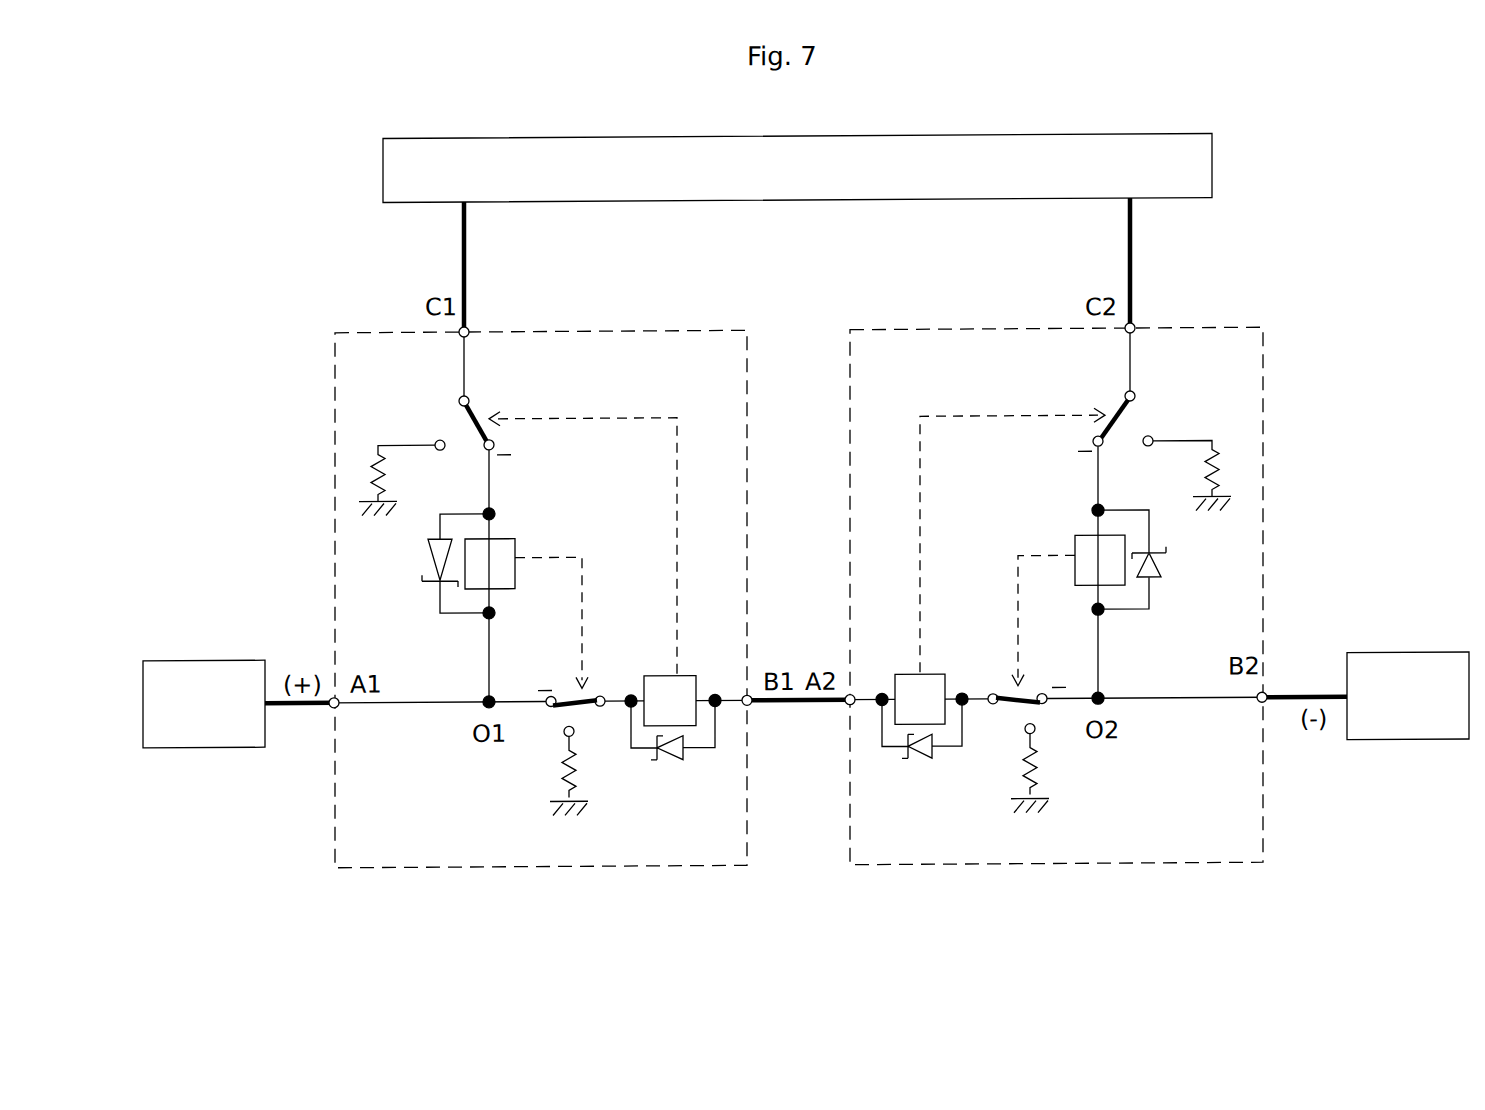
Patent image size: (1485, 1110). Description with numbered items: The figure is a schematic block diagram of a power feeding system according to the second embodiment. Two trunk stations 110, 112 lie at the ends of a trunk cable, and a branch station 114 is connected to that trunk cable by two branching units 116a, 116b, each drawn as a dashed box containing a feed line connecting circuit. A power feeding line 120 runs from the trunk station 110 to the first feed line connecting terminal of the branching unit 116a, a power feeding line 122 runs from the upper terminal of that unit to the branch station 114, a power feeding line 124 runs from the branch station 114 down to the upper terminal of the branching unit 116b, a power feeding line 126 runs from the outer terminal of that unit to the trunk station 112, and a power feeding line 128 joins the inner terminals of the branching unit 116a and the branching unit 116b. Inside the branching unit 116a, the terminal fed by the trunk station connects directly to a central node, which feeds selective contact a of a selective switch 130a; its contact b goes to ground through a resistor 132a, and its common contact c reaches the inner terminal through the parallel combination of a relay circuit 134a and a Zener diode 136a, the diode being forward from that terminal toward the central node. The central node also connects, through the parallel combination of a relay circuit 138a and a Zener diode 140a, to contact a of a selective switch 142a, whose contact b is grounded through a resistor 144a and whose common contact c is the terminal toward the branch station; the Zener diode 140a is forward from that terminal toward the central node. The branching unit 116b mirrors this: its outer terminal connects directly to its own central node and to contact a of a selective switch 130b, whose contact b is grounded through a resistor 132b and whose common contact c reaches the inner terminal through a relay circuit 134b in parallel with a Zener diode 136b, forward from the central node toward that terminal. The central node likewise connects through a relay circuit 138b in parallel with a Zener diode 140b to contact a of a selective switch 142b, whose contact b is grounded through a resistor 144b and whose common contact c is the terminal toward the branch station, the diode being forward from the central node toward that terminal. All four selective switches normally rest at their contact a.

The trunk station 110 is at (210, 660).
The trunk station 112 is at (1412, 659).
The branch station 114 is at (383, 174).
The branching unit 116a is at (703, 348).
The branching unit 116b is at (908, 348).
The power feeding line 120 is at (293, 708).
The power feeding line 122 is at (464, 247).
The power feeding line 124 is at (1130, 243).
The power feeding line 126 is at (1290, 705).
The power feeding line 128 is at (800, 708).
The selective switch 130a is at (550, 715).
The selective switch 130b is at (1038, 715).
The resistor 132a is at (588, 777).
The resistor 132b is at (1012, 787).
The relay circuit 134a is at (652, 676).
The relay circuit 134b is at (942, 676).
The Zener diode 136a is at (665, 768).
The Zener diode 136b is at (912, 763).
The relay circuit 138a is at (505, 545).
The relay circuit 138b is at (1080, 545).
The Zener diode 140a is at (425, 569).
The Zener diode 140b is at (1165, 570).
The selective switch 142a is at (462, 425).
The selective switch 142b is at (1133, 428).
The resistor 144a is at (360, 466).
The resistor 144b is at (1240, 470).